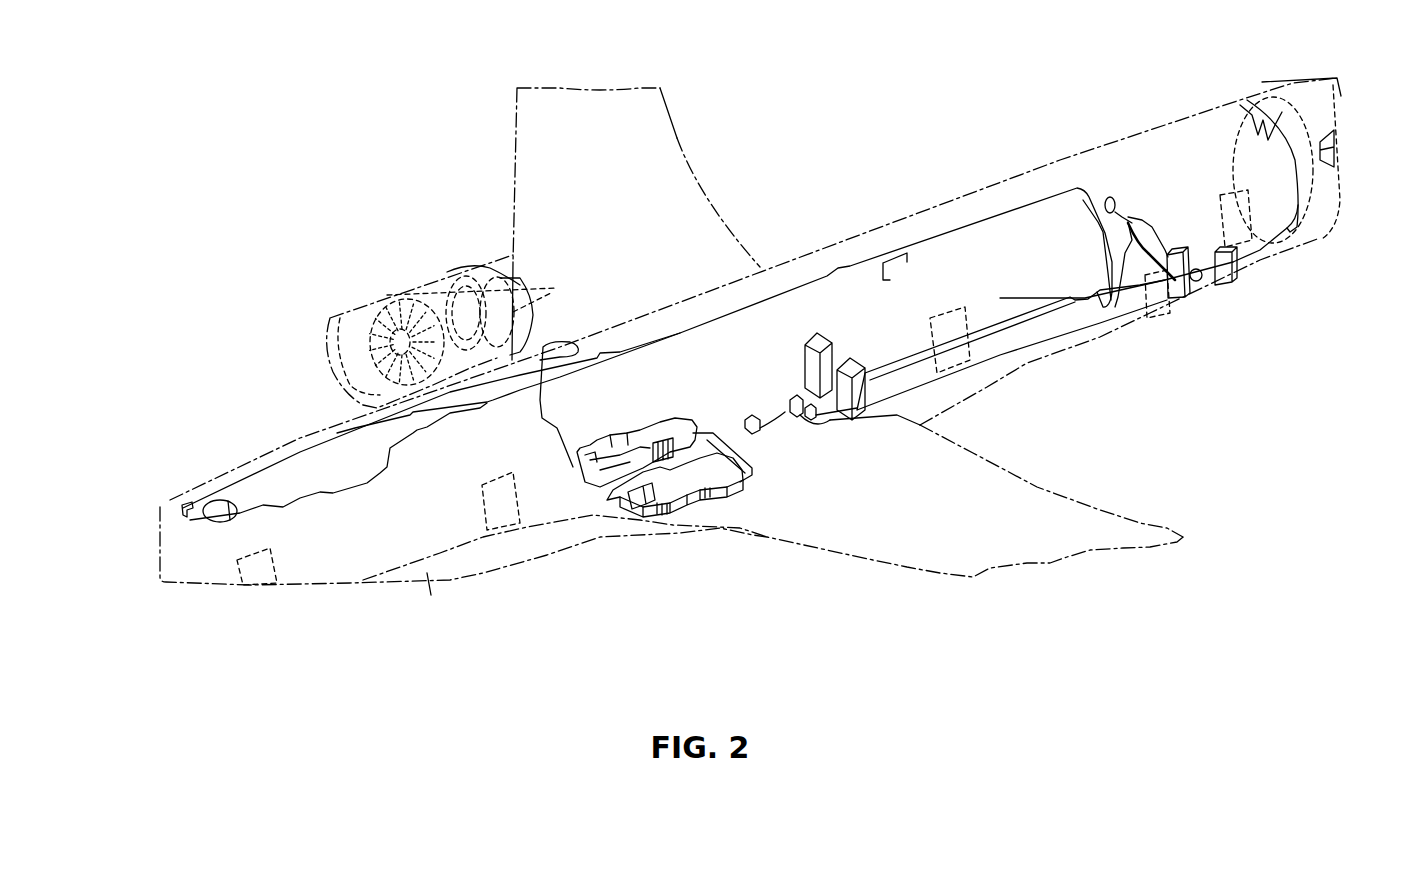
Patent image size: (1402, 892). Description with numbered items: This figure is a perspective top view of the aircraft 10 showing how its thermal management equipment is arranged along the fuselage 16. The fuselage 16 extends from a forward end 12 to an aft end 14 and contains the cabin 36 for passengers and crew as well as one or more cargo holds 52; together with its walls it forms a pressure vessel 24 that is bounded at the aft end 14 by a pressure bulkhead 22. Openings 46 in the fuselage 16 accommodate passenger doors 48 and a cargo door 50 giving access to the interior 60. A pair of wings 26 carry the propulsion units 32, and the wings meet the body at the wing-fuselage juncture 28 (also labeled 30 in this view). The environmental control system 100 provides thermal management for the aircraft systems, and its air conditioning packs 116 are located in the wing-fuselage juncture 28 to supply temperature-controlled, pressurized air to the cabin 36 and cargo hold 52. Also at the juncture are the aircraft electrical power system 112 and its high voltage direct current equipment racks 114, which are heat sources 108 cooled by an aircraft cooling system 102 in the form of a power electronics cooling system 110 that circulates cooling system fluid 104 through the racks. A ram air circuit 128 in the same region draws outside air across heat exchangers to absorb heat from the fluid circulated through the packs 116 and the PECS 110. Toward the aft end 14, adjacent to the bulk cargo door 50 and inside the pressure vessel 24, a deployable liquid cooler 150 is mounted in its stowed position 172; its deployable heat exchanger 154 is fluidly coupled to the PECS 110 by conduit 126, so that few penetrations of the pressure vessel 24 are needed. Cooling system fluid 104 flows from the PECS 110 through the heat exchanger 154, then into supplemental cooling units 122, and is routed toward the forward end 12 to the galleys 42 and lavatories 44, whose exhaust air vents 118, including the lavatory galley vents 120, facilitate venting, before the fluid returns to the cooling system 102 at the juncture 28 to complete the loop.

The aircraft 10 is at (238, 130).
The forward end 12 is at (165, 576).
The aft end 14 is at (1327, 150).
The fuselage 16 is at (900, 221).
The pressure bulkhead 22 is at (1307, 200).
The pressure vessel 24 is at (995, 185).
The wings 26 is at (677, 138).
The wing-fuselage juncture 28 is at (575, 502).
The floor panel 30 is at (559, 404).
The propulsion units 32 is at (403, 278).
The cabin 36 is at (370, 560).
The galleys 42 is at (680, 282).
The lavatories 44 is at (1261, 122).
The openings 46 is at (760, 439).
The passenger doors 48 is at (1265, 233).
The cargo door 50 is at (1160, 310).
The cargo holds 52 is at (429, 599).
The interior 60 is at (803, 257).
The environmental control system 100 is at (607, 500).
The aircraft cooling system 102 is at (650, 554).
The cooling system fluid 104 is at (1060, 343).
The heat sources 108 is at (833, 367).
The power electronics cooling system 110 is at (645, 505).
The aircraft electrical power system 112 is at (805, 383).
The high voltage direct current equipment rack 114 is at (850, 373).
The air conditioning packs 116 is at (603, 487).
The exhaust air vents 118 is at (739, 301).
The lavatory galley vents 120 is at (222, 499).
The supplemental cooling units 122 is at (1233, 278).
The conduit 126 is at (997, 380).
The ram air circuit 128 is at (657, 517).
The deployable liquid cooler 150 is at (1219, 311).
The deployable heat exchanger 154 is at (1178, 272).
The stowed position 172 is at (1177, 297).